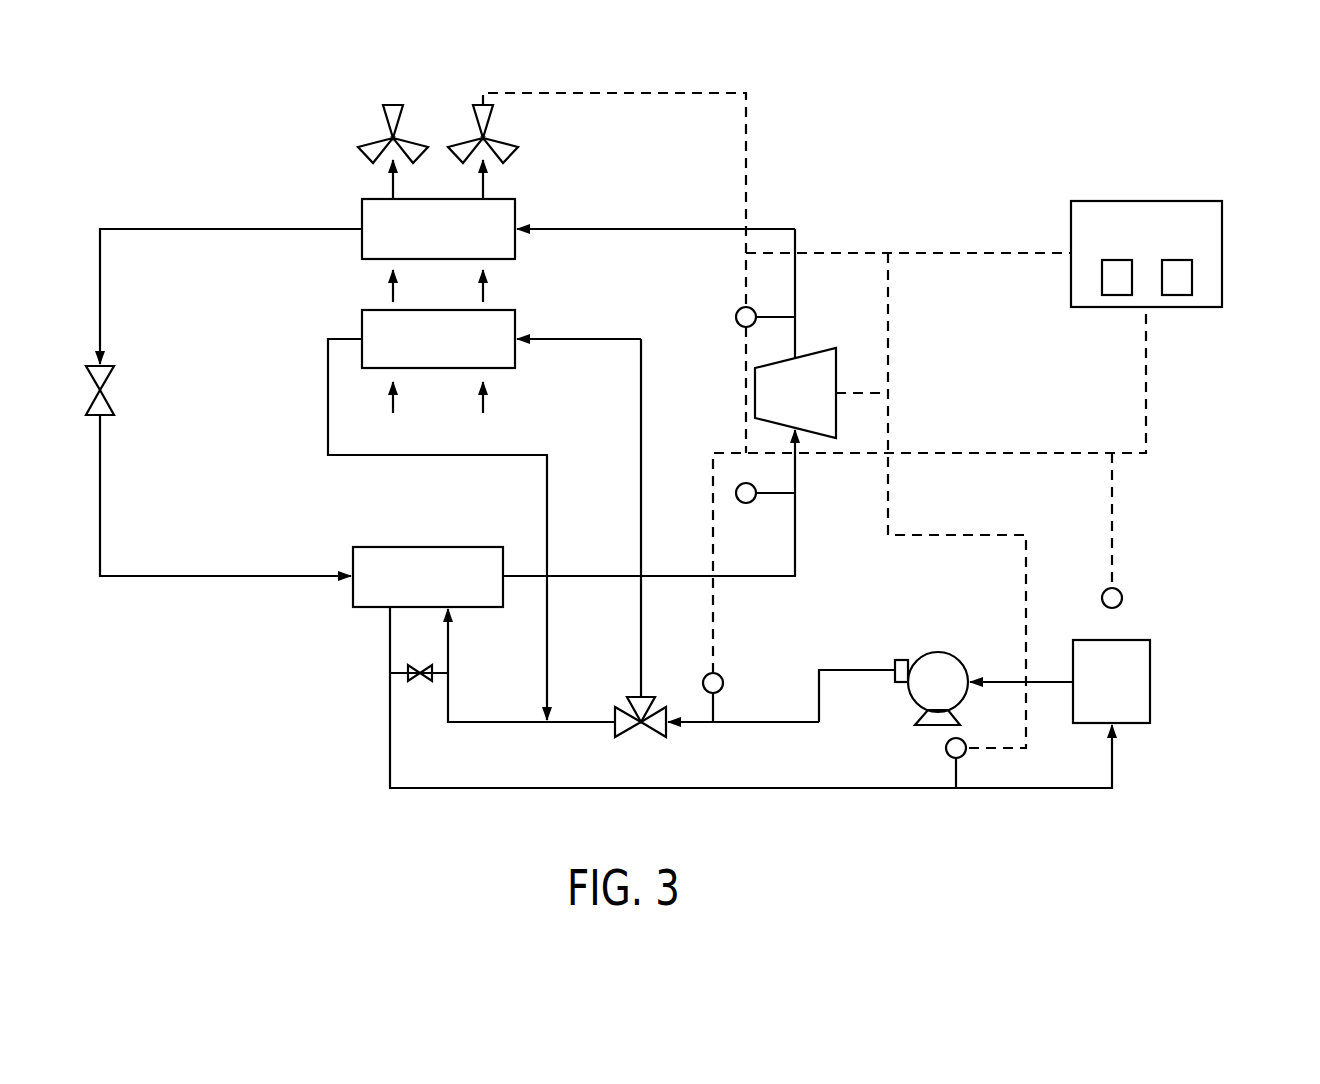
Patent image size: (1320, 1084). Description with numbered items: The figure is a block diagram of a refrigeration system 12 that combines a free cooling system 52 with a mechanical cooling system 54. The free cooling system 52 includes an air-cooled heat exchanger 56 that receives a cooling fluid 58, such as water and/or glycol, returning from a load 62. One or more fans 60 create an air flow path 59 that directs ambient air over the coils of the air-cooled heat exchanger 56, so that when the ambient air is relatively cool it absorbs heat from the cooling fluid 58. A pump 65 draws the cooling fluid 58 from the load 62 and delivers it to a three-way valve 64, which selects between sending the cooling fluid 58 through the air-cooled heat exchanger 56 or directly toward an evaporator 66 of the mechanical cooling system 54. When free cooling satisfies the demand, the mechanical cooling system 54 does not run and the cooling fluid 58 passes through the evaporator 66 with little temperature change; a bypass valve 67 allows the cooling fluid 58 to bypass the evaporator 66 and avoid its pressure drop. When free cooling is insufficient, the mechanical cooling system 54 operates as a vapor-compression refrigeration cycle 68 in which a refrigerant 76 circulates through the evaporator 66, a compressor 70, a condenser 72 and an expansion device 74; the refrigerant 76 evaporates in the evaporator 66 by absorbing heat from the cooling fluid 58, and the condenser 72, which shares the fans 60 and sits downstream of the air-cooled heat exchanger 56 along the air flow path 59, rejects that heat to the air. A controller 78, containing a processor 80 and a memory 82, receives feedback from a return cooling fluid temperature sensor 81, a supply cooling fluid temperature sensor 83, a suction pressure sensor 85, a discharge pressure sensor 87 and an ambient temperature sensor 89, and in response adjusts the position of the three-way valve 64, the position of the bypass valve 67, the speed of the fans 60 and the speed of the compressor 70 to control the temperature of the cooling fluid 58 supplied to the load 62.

The refrigeration system 12 is at (1240, 133).
The free cooling system 52 is at (503, 388).
The mechanical cooling system 54 is at (228, 186).
The air-cooled heat exchanger 56 is at (515, 320).
The cooling fluid 58 is at (641, 520).
The air flow path 59 is at (393, 182).
The fans 60 is at (400, 122).
The load 62 is at (1150, 680).
The three-way valve 64 is at (655, 735).
The pump 65 is at (938, 652).
The evaporator 66 is at (457, 547).
The bypass valve 67 is at (423, 683).
The vapor-compression refrigeration cycle 68 is at (302, 366).
The compressor 70 is at (755, 393).
The condenser 72 is at (515, 210).
The expansion device 74 is at (108, 388).
The refrigerant 76 is at (100, 292).
The controller 78 is at (1150, 201).
The processor 80 is at (1118, 295).
The return cooling fluid temperature sensor 81 is at (723, 680).
The memory 82 is at (1176, 295).
The supply cooling fluid temperature sensor 83 is at (964, 743).
The suction pressure sensor 85 is at (736, 493).
The discharge pressure sensor 87 is at (736, 317).
The ambient temperature sensor 89 is at (1122, 598).